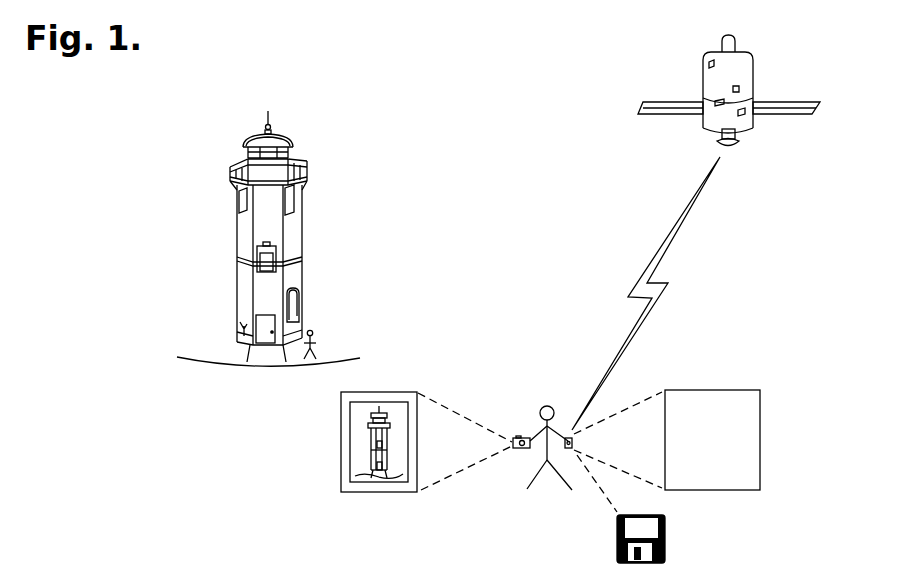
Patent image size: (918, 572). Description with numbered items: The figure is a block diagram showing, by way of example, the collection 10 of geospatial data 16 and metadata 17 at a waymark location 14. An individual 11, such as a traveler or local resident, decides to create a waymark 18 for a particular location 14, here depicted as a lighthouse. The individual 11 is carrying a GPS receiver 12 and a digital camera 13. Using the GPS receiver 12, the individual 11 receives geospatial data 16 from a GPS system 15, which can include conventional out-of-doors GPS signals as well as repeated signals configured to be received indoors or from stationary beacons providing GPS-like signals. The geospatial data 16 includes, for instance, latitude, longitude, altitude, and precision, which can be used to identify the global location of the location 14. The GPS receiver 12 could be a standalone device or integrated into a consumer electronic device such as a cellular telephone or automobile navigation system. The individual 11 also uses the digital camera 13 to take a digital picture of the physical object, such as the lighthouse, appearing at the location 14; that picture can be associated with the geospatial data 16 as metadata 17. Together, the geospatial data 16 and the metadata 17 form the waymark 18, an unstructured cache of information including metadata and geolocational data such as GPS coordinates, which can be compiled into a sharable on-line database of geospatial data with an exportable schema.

The collection 10 is at (208, 76).
The individual 11 is at (540, 414).
The GPS receiver 12 is at (568, 437).
The digital camera 13 is at (516, 450).
The location 14 is at (160, 117).
The GPS system 15 is at (703, 78).
The geospatial data 16 is at (760, 448).
The metadata 17 is at (341, 440).
The waymark 18 is at (666, 536).